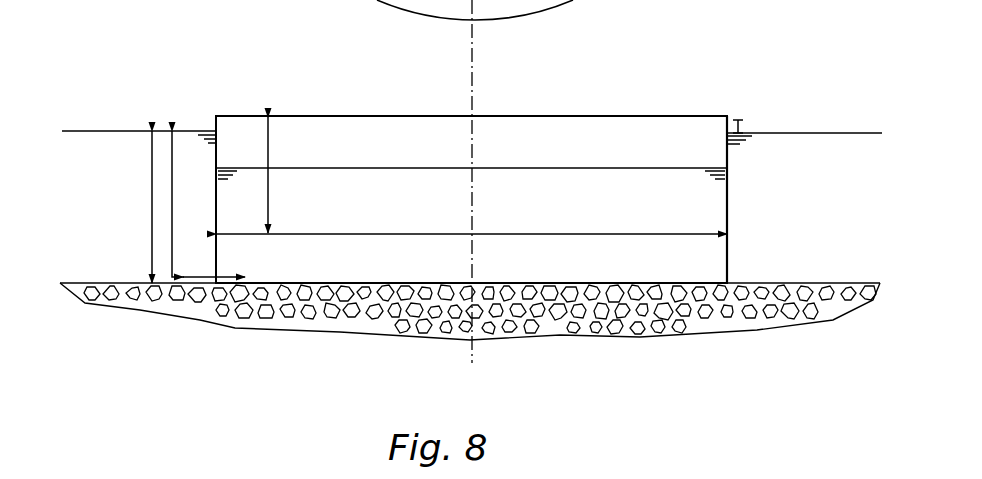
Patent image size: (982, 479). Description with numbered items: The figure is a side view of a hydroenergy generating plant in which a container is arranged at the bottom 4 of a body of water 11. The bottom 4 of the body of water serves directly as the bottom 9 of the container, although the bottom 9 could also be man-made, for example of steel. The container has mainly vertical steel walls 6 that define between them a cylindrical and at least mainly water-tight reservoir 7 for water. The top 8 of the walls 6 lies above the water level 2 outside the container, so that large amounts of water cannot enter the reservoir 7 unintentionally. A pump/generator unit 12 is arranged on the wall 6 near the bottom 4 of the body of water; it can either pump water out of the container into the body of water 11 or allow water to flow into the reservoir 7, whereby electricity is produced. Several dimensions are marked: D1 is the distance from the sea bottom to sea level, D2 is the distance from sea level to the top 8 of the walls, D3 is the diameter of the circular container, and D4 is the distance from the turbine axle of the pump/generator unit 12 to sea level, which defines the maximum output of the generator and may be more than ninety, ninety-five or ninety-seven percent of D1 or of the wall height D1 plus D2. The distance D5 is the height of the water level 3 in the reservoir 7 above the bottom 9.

The water level 2 is at (825, 133).
The water level in the reservoir 3 is at (545, 167).
The bottom of the body of water 4 is at (810, 283).
The steel walls 6 is at (727, 207).
The reservoir 7 is at (360, 217).
The top of the walls 8 is at (727, 117).
The bottom of the container 9 is at (518, 285).
The body of water 11 is at (857, 223).
The pump/generator unit 12 is at (213, 270).
The distance from sea bottom to sea level D1 is at (153, 157).
The distance from sea level to top of the walls D2 is at (742, 130).
The diameter of the circular container D3 is at (565, 232).
The distance from the turbine axle to sea level D4 is at (180, 157).
The height of water level in the reservoir D5 is at (270, 133).